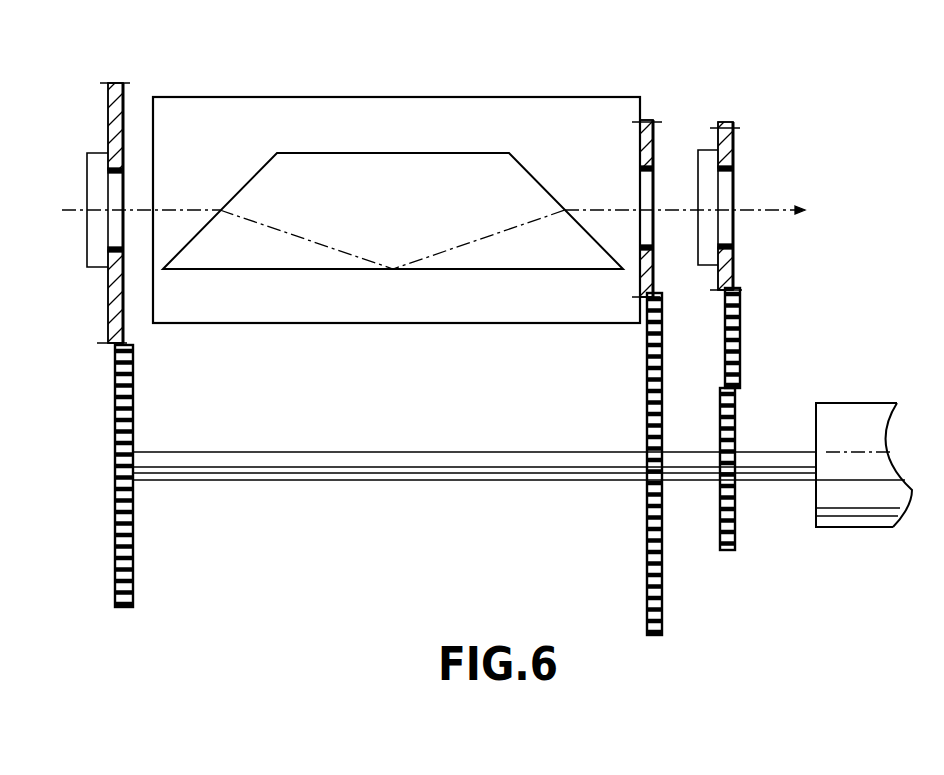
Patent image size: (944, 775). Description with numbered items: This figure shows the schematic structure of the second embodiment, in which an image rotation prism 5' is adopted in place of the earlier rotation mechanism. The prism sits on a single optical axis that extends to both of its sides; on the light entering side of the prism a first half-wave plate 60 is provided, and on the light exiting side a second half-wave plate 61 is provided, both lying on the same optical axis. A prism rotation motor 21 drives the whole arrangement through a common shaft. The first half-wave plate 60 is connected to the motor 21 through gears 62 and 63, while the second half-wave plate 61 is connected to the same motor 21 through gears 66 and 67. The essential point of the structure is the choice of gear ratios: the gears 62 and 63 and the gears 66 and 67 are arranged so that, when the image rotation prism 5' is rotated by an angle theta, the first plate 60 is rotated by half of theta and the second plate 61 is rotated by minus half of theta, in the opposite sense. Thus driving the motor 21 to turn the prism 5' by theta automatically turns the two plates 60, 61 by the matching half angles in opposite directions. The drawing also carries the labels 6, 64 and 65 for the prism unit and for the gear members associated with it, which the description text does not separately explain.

The prism unit 6 is at (338, 90).
The image rotation prism 5' is at (393, 254).
The prism rotation motor 21 is at (860, 415).
The first λ/2 plate 60 is at (92, 268).
The second λ/2 plate 61 is at (704, 155).
The gear 62 is at (108, 119).
The gear 63 is at (115, 423).
The rotary plate 64 is at (645, 122).
The gear 65 is at (647, 588).
The gear 66 is at (735, 130).
The gear 67 is at (727, 551).